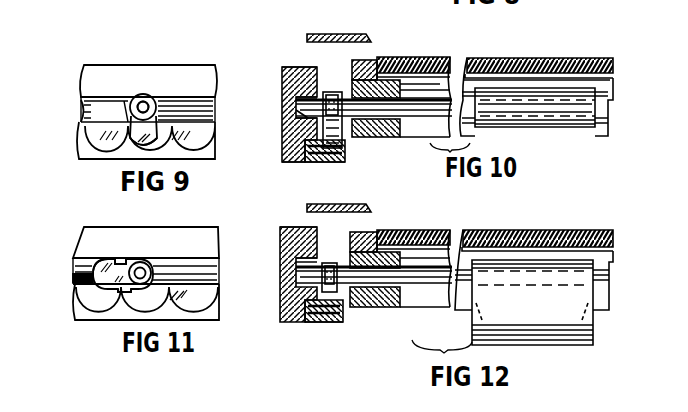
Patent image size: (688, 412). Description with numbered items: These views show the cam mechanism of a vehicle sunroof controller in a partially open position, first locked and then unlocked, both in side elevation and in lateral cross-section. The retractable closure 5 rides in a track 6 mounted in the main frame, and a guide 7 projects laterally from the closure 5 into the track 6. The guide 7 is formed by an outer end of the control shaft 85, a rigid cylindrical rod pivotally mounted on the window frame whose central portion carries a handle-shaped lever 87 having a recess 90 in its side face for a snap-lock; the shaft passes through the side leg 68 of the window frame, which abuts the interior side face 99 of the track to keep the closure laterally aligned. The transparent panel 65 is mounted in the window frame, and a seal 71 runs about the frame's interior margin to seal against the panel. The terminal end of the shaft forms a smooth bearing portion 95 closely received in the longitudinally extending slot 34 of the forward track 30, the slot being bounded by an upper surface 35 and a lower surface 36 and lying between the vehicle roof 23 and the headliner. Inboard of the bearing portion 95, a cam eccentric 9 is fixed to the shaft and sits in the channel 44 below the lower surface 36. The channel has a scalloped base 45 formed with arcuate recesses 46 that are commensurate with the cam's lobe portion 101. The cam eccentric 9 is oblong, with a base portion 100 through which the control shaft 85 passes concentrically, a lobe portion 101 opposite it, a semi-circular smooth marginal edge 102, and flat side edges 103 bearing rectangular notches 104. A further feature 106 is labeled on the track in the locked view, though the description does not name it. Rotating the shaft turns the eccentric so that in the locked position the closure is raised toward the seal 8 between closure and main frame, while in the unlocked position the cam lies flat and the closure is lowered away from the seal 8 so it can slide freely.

In FIG. 10, the closure 5 is at (412, 57).
In FIG. 12, the closure 5 is at (412, 230).
In FIG. 9, the track 6 is at (194, 66).
In FIG. 10, the track 6 is at (283, 66).
In FIG. 11, the track 6 is at (196, 228).
In FIG. 12, the track 6 is at (285, 227).
In FIG. 9, the guide 7 is at (153, 96).
In FIG. 10, the guide 7 is at (334, 92).
In FIG. 10, the seal 8 is at (366, 60).
In FIG. 12, the seal 8 is at (366, 232).
In FIG. 9, the cam eccentric 9 is at (137, 148).
In FIG. 10, the cam eccentric 9 is at (318, 161).
In FIG. 11, the cam eccentric 9 is at (93, 266).
In FIG. 10, the vehicle roof 23 is at (340, 31).
In FIG. 12, the vehicle roof 23 is at (348, 203).
In FIG. 9, the forward track 30 is at (143, 64).
In FIG. 10, the forward track 30 is at (282, 76).
In FIG. 11, the forward track 30 is at (143, 226).
In FIG. 12, the forward track 30 is at (280, 306).
In FIG. 9, the slot 34 is at (216, 101).
In FIG. 10, the slot 34 is at (296, 100).
In FIG. 11, the slot 34 is at (219, 268).
In FIG. 12, the slot 34 is at (296, 260).
In FIG. 9, the upper surface 35 is at (80, 105).
In FIG. 12, the upper surface 35 is at (322, 266).
In FIG. 9, the lower surface 36 is at (80, 115).
In FIG. 10, the lower surface 36 is at (282, 136).
In FIG. 9, the channel 44 is at (79, 136).
In FIG. 11, the channel 44 is at (77, 300).
In FIG. 9, the scalloped base 45 is at (80, 156).
In FIG. 11, the scalloped base 45 is at (210, 312).
In FIG. 12, the scalloped base 45 is at (334, 322).
In FIG. 11, the recess 46 is at (178, 295).
In FIG. 10, the transparent panel 65 is at (532, 58).
In FIG. 12, the transparent panel 65 is at (534, 257).
In FIG. 10, the side leg 68 is at (388, 138).
In FIG. 12, the side leg 68 is at (386, 308).
In FIG. 10, the seal 71 is at (412, 85).
In FIG. 9, the control shaft 85 is at (139, 97).
In FIG. 10, the control shaft 85 is at (610, 97).
In FIG. 11, the control shaft 85 is at (152, 273).
In FIG. 12, the control shaft 85 is at (606, 270).
In FIG. 10, the lever 87 is at (571, 128).
In FIG. 12, the lever 87 is at (570, 345).
In FIG. 12, the recess 90 is at (585, 318).
In FIG. 10, the bearing portion 95 is at (300, 118).
In FIG. 12, the bearing portion 95 is at (298, 276).
In FIG. 10, the interior side face 99 is at (346, 150).
In FIG. 12, the interior side face 99 is at (344, 314).
In FIG. 11, the base portion 100 is at (141, 260).
In FIG. 11, the lobe portion 101 is at (109, 260).
In FIG. 11, the marginal edge 102 is at (73, 279).
In FIG. 11, the side edge 103 is at (120, 260).
In FIG. 11, the notch 104 is at (125, 292).
In FIG. 9, the groove 106 is at (148, 112).